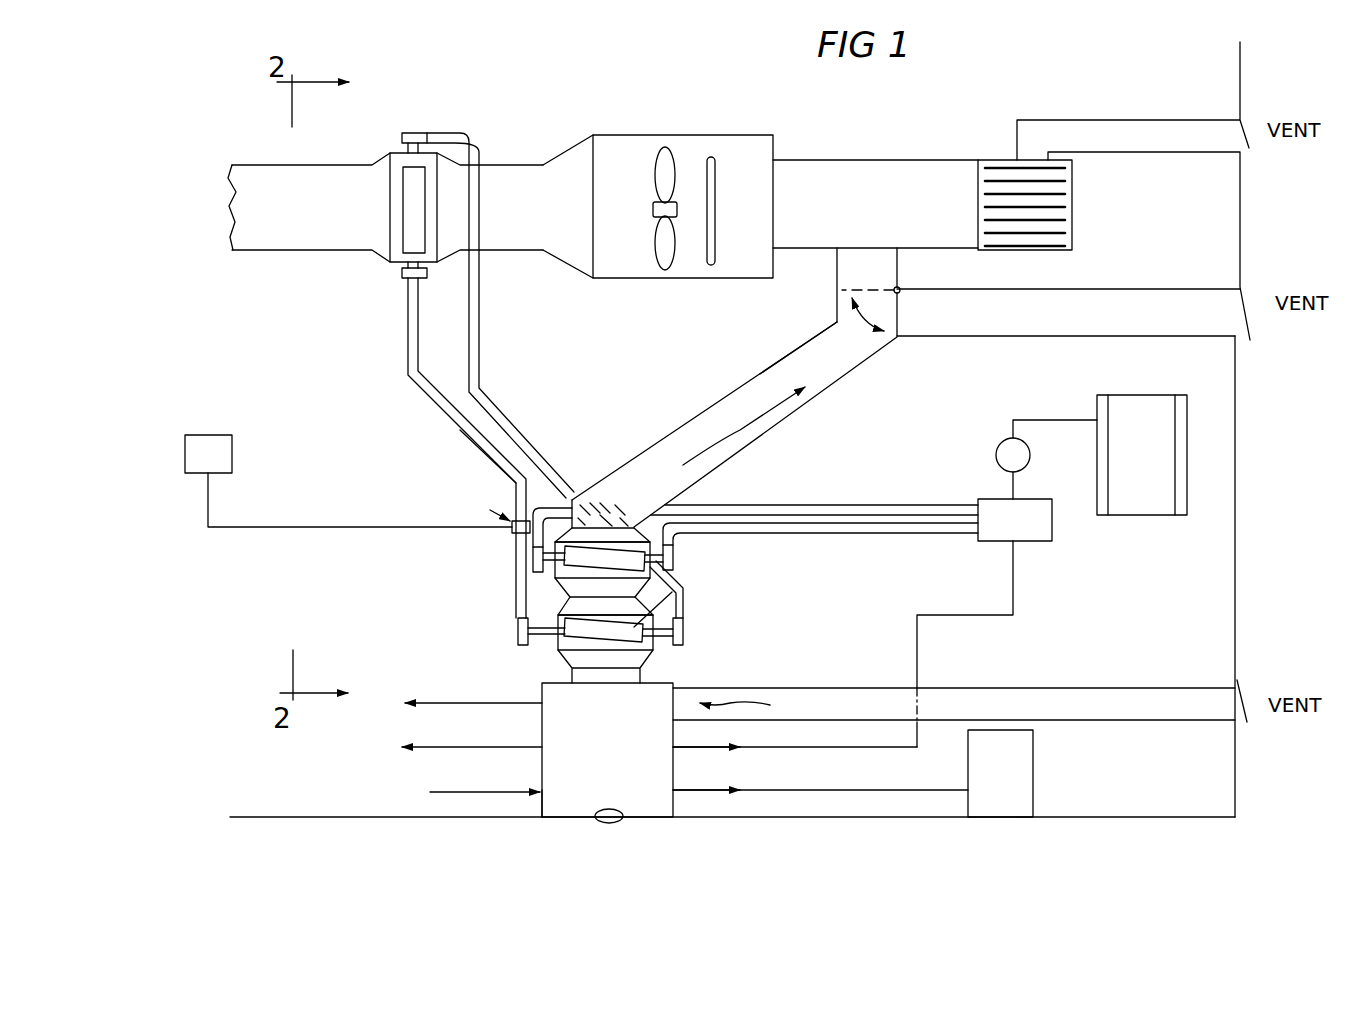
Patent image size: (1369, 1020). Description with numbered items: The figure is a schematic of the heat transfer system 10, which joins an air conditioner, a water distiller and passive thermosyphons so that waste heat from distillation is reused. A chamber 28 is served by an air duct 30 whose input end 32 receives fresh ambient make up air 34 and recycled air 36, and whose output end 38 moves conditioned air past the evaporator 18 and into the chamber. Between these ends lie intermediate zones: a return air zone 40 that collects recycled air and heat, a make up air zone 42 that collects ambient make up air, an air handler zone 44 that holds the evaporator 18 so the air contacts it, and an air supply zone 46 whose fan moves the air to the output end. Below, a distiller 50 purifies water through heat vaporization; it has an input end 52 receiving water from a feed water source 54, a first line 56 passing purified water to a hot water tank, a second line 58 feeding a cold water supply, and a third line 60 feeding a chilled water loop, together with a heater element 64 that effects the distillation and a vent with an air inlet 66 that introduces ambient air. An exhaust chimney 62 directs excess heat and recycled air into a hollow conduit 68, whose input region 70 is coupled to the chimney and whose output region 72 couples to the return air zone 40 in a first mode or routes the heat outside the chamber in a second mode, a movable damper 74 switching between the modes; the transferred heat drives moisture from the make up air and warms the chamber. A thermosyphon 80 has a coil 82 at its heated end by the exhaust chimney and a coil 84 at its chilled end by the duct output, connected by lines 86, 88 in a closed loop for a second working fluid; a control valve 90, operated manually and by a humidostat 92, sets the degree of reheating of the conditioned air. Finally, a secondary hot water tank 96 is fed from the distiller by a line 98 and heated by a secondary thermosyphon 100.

The heat transfer system 10 is at (920, 124).
The evaporator 18 is at (715, 200).
The chamber 28 is at (228, 202).
The air duct 30 is at (333, 252).
The input end 32 is at (1072, 203).
The fresh ambient make up air 34 is at (1073, 246).
The recycled air 36 is at (1030, 250).
The output end 38 is at (793, 192).
The return air zone 40 is at (953, 197).
The make up air zone 42 is at (870, 233).
The air handler zone 44 is at (680, 147).
The air supply zone 46 is at (638, 203).
The distiller 50 is at (663, 800).
The input end 52 is at (542, 790).
The feed water source 54 is at (437, 795).
The first line 56 is at (815, 790).
The second line 58 is at (520, 750).
The third line 60 is at (450, 710).
The exhaust chimney 62 is at (640, 675).
The heater element 64 is at (615, 822).
The vent with an air inlet 66 is at (1237, 722).
The conduit 68 is at (690, 427).
The input region 70 is at (618, 548).
The output region 72 is at (830, 325).
The movable damper 74 is at (897, 303).
The thermosyphon 80 is at (463, 435).
The coil 82 is at (680, 597).
The coil 84 is at (412, 203).
The line 86 is at (408, 350).
The line 88 is at (480, 345).
The control valve 90 is at (512, 533).
The humidostat 92 is at (232, 458).
The secondary hot water tank 96 is at (1187, 465).
The line 98 is at (1057, 420).
The secondary thermosyphon 100 is at (803, 505).